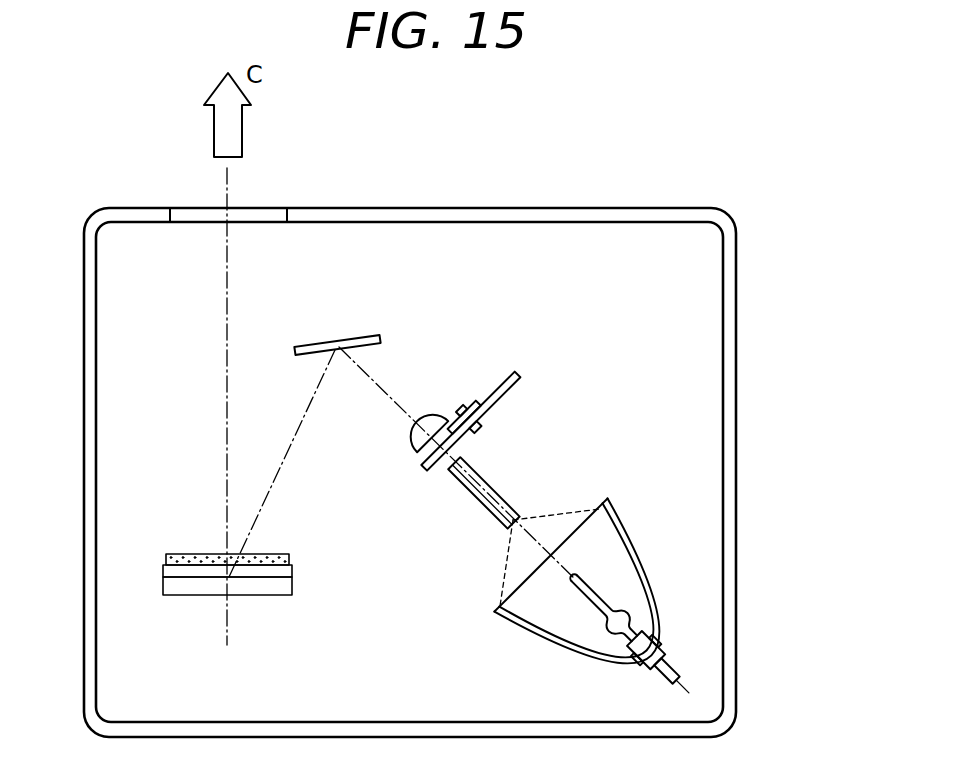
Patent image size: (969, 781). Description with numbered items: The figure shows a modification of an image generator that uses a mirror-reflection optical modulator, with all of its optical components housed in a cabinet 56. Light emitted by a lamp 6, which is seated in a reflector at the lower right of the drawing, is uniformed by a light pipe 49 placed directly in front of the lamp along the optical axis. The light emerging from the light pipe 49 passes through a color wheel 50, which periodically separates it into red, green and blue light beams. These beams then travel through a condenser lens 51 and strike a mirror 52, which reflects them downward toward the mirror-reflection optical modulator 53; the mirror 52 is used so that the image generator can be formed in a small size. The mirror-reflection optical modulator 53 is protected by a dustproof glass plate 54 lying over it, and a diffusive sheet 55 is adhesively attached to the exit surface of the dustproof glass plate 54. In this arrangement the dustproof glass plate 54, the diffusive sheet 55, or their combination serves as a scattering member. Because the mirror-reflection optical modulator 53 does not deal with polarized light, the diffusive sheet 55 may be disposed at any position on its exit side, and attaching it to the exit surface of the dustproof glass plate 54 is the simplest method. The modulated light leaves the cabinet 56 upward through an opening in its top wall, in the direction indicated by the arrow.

The cabinet 56 is at (619, 208).
The mirror 52 is at (343, 340).
The condenser lens 51 is at (423, 422).
The color wheel 50 is at (522, 368).
The light pipe 49 is at (505, 493).
The lamp 6 is at (630, 528).
The diffusive sheet 55 is at (187, 553).
The dustproof glass plate 54 is at (292, 570).
The mirror-reflection optical modulator 53 is at (163, 585).